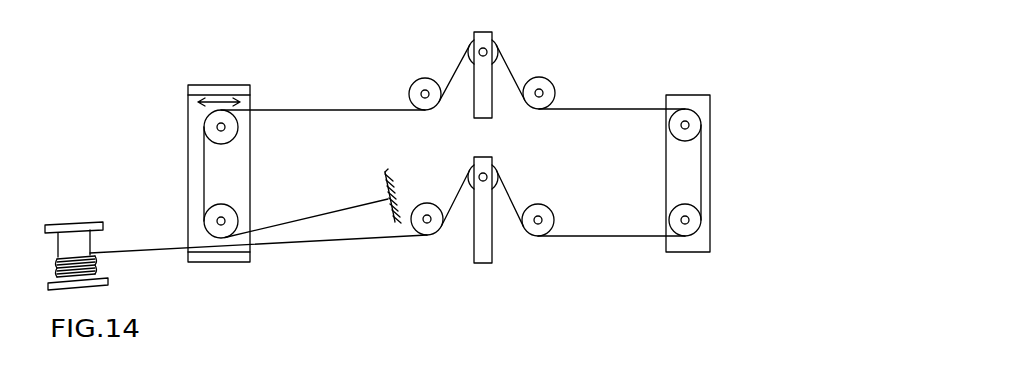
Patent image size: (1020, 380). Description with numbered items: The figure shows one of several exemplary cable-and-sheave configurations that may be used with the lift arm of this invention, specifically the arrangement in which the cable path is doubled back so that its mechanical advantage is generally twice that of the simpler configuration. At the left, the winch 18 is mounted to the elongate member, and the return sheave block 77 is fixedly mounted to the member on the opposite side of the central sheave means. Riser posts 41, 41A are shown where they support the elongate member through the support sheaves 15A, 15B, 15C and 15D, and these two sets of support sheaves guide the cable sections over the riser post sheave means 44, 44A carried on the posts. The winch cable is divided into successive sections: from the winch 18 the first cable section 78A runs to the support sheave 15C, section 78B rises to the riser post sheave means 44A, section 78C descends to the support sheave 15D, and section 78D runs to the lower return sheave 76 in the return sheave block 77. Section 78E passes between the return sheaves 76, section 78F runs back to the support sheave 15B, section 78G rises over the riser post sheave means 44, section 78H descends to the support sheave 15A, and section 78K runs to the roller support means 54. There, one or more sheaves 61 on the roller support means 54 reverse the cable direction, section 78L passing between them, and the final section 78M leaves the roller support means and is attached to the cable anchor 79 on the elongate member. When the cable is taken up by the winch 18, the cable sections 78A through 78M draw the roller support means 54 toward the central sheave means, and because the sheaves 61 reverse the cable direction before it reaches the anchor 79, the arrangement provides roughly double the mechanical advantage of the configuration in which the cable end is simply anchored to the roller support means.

The winch 18 is at (65, 242).
The roller support means 54 is at (203, 152).
The sheaves 61 is at (232, 128).
The winch cable section 78L is at (206, 187).
The winch cable section 78K is at (297, 108).
The winch cable section 78M is at (303, 215).
The cable anchor 79 is at (387, 171).
The winch cable section 78A is at (303, 245).
The support sheave 15A is at (417, 82).
The winch cable section 78H is at (462, 60).
The riser post sheave means 44 is at (497, 42).
The riser post 41 is at (483, 97).
The winch cable section 78G is at (507, 65).
The support sheave 15B is at (553, 83).
The winch cable section 78F is at (623, 108).
The return sheave block 77 is at (692, 243).
The return sheave 76 is at (695, 125).
The winch cable section 78E is at (703, 178).
The winch cable section 78D is at (620, 233).
The support sheave 15D is at (550, 218).
The winch cable section 78C is at (508, 193).
The riser post sheave means 44A is at (498, 168).
The riser post 41A is at (482, 247).
The winch cable section 78B is at (457, 200).
The support sheave 15C is at (433, 230).